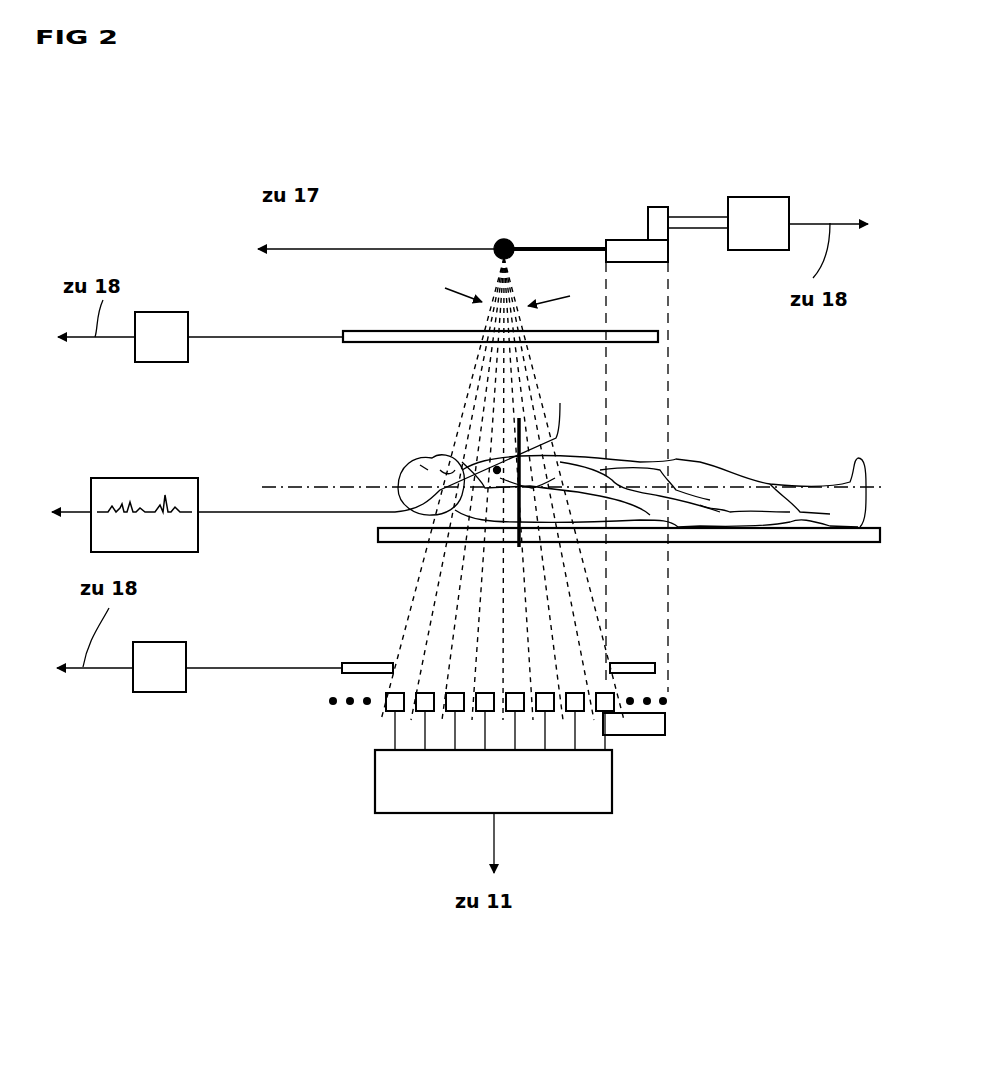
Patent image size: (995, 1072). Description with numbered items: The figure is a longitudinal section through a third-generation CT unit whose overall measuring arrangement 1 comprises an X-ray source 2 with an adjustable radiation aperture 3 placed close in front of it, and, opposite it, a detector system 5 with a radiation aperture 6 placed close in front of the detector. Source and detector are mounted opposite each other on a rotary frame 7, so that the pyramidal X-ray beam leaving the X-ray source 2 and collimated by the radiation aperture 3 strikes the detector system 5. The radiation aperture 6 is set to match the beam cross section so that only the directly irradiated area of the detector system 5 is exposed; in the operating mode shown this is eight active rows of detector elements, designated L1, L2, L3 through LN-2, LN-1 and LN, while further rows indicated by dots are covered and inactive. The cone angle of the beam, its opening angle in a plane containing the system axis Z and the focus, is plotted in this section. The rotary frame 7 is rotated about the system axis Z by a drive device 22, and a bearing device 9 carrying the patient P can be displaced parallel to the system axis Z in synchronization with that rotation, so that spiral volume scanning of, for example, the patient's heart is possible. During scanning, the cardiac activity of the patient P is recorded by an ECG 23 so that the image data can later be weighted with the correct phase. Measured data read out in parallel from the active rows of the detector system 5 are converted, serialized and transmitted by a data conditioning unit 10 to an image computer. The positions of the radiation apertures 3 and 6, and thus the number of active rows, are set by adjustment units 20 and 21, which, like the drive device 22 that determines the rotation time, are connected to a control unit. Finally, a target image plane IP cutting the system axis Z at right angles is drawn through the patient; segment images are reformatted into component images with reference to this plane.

The measuring arrangement 1 is at (672, 460).
The X-ray source 2 is at (497, 242).
The radiation aperture 3 is at (365, 330).
The detector system 5 is at (300, 808).
The radiation aperture 6 is at (362, 662).
The rotary frame 7 is at (615, 235).
The bearing device 9 is at (378, 535).
The data conditioning unit 10 is at (593, 773).
The adjustment unit 20 is at (160, 363).
The adjustment unit 21 is at (160, 692).
The drive device 22 is at (757, 215).
The ECG 23 is at (138, 478).
The target image plane IP is at (546, 464).
The patient P is at (410, 462).
The system axis Z is at (305, 487).
The active row of detector elements L1 is at (392, 702).
The active row of detector elements L2 is at (428, 700).
The active row of detector elements L3 is at (452, 700).
The active row of detector elements LN-2 is at (548, 700).
The active row of detector elements LN-1 is at (578, 698).
The active row of detector elements LN is at (606, 697).